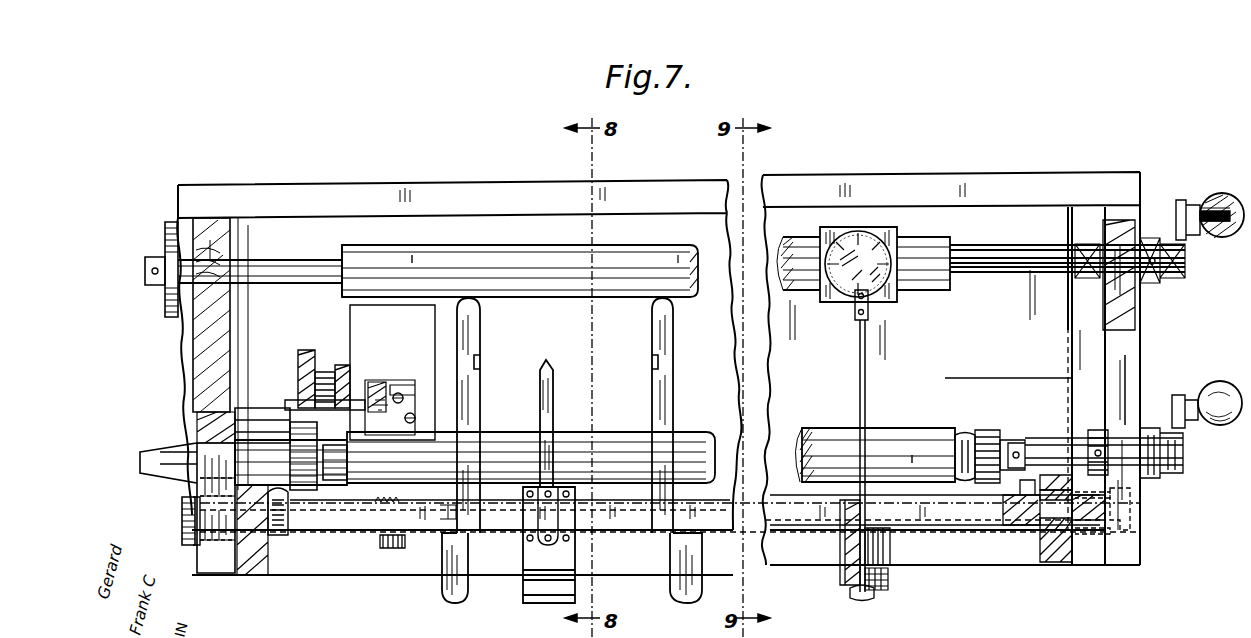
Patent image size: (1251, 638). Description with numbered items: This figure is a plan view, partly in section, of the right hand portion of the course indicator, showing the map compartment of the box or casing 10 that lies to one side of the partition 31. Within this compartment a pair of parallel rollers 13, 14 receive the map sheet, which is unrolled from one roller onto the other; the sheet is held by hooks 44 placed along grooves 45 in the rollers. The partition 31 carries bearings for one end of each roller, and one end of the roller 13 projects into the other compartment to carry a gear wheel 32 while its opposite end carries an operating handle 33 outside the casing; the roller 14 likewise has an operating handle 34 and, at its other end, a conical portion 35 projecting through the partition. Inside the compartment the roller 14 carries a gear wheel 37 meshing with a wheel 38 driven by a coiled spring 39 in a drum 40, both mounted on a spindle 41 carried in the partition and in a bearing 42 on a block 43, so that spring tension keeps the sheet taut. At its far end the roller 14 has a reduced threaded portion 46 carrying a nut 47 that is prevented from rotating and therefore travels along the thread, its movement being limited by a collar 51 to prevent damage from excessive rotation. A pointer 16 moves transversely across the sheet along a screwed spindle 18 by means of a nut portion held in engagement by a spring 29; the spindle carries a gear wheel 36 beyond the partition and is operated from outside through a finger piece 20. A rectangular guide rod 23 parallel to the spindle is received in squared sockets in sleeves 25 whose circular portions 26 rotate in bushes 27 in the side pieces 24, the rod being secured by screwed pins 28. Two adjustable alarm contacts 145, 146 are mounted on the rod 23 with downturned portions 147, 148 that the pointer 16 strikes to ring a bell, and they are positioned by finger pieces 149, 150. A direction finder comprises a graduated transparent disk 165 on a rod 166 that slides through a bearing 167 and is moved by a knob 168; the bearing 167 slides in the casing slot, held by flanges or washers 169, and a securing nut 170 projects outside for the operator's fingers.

The box or casing 10 is at (472, 198).
The roller 13 is at (546, 270).
The roller 14 is at (494, 452).
The pointer 16 is at (548, 380).
The screwed spindle 18 is at (388, 540).
The finger piece 20 is at (555, 592).
The rectangular guide rod 23 is at (348, 520).
The side pieces 24 is at (1050, 548).
The sleeve 25 is at (1040, 522).
The circular portion 26 is at (1075, 522).
The bush 27 is at (1068, 525).
The screwed pins 28 is at (1018, 512).
The spring 29 is at (285, 510).
The partition 31 is at (212, 358).
The gear wheel 32 is at (170, 300).
The operating handle 33 is at (1218, 195).
The operating handle 34 is at (1212, 393).
The conical portion 35 is at (150, 458).
The gear wheel 36 is at (182, 520).
The gear wheel 37 is at (300, 445).
The wheel 38 is at (302, 358).
The coiled spring 39 is at (325, 372).
The drum 40 is at (338, 370).
The spindle 41 is at (256, 415).
The bearing 42 is at (385, 392).
The block 43 is at (375, 356).
The hooks 44 is at (415, 262).
The grooves 45 is at (353, 262).
The reduced threaded portion 46 is at (972, 440).
The nut 47 is at (998, 440).
The collar 51 is at (1020, 440).
The adjustable contact 145 is at (468, 322).
The adjustable contact 146 is at (662, 320).
The downturned portion 147 is at (480, 364).
The downturned portion 148 is at (660, 364).
The finger piece 149 is at (452, 595).
The finger piece 150 is at (688, 595).
The disk 165 is at (868, 308).
The rod 166 is at (866, 366).
The bearing 167 is at (880, 548).
The knob 168 is at (858, 596).
The flanges or washers 169 is at (842, 530).
The securing nut 170 is at (878, 590).